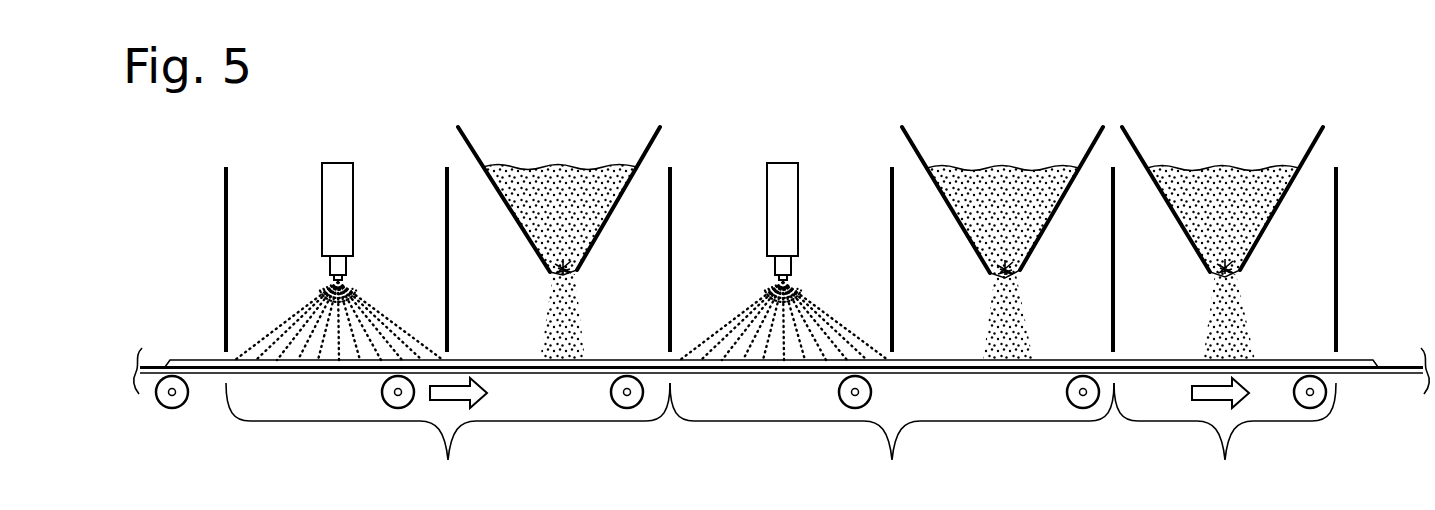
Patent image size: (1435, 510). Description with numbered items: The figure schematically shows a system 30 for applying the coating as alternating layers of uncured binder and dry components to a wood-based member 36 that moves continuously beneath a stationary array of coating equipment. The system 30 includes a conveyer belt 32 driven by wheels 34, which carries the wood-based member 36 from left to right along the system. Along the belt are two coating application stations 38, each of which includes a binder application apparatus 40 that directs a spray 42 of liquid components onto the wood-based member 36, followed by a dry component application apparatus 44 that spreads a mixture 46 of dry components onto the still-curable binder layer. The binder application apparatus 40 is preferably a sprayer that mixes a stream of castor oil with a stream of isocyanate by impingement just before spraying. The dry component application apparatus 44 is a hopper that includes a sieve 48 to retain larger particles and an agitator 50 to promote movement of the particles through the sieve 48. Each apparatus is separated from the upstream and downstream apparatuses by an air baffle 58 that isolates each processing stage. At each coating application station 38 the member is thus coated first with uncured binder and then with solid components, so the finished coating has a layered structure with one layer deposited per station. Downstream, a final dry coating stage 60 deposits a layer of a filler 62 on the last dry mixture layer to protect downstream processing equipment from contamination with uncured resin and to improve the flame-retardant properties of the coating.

The system 30 is at (1185, 65).
The conveyer belt 32 is at (1393, 376).
The wheels 34 is at (1066, 384).
The wood-based member 36 is at (1362, 360).
The coating application station 38 is at (670, 437).
The binder application apparatus 40 is at (346, 195).
The spray 42 is at (281, 320).
The dry component application apparatus 44 is at (650, 152).
The mixture of dry components 46 is at (540, 175).
The sieve 48 is at (572, 278).
The agitator 50 is at (551, 280).
The air baffle 58 is at (228, 213).
The final dry coating stage 60 is at (1225, 437).
The filler 62 is at (1200, 172).